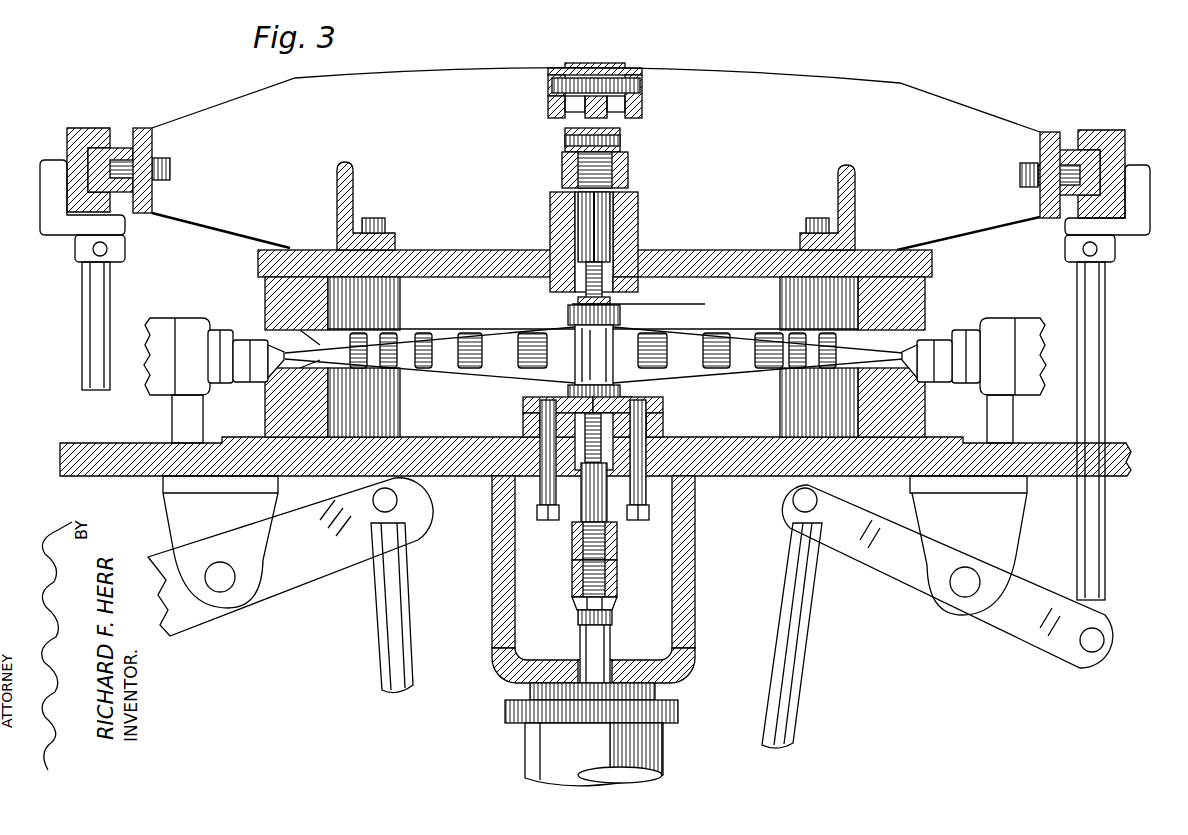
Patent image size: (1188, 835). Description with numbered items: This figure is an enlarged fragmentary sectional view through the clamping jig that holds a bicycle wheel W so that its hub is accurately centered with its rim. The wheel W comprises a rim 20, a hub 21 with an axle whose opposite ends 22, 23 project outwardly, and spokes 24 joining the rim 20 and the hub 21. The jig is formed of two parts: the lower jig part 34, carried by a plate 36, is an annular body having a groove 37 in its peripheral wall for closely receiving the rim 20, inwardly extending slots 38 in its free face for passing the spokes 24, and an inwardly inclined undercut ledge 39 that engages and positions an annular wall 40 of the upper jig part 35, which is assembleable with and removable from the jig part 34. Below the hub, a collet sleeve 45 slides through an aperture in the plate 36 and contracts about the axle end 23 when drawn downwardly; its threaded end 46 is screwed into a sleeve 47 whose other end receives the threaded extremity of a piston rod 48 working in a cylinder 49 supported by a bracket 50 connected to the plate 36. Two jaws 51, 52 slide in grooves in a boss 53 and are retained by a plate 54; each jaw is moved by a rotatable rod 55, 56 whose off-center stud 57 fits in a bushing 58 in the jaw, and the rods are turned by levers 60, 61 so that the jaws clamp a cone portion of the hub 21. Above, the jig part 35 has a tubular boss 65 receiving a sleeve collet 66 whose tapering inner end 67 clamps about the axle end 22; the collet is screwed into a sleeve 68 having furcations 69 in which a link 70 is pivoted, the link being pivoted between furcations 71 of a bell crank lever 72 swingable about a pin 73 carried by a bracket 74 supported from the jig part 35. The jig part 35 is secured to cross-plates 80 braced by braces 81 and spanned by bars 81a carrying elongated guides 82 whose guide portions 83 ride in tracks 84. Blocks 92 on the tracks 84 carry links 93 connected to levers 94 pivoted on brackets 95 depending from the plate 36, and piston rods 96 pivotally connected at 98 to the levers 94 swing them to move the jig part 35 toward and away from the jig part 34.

The rim 20 is at (912, 378).
The hub 21 is at (590, 355).
The axle end 22 is at (580, 300).
The axle end 23 is at (578, 436).
The spokes 24 is at (458, 369).
The jig part 34 is at (268, 420).
The jig part 35 is at (408, 250).
The plate 36 is at (742, 452).
The groove 37 is at (272, 395).
The slots 38 is at (398, 312).
The undercut ledge 39 is at (298, 338).
The annular wall 40 is at (312, 308).
The collet sleeve 45 is at (590, 508).
The end 46 is at (618, 540).
The sleeve 47 is at (618, 575).
The piston rod 48 is at (605, 645).
The cylinder 49 is at (645, 758).
The bracket 50 is at (697, 656).
The jaw 51 is at (525, 406).
The jaw 52 is at (664, 406).
The boss 53 is at (663, 427).
The plate 54 is at (536, 397).
The rotatable rod 55 is at (548, 460).
The rotatable rod 56 is at (668, 470).
The off-center stud 57 is at (637, 400).
The bushing 58 is at (642, 398).
The lever 60 is at (548, 500).
The lever 61 is at (642, 500).
The tubular boss 65 is at (640, 212).
The sleeve collet 66 is at (585, 215).
The tapering inner end 67 is at (616, 290).
The sleeve 68 is at (630, 170).
The furcations 69 is at (567, 128).
The link 70 is at (642, 110).
The furcations 71 is at (583, 67).
The bell crank lever 72 is at (612, 64).
The pin 73 is at (550, 88).
The bracket 74 is at (556, 110).
The cross-plates 80 is at (410, 88).
The braces 81 is at (352, 193).
The bar 81a is at (152, 140).
The elongated guide 82 is at (128, 140).
The guide portion 83 is at (103, 150).
The track 84 is at (70, 130).
The block 92 is at (55, 178).
The link 93 is at (90, 322).
The lever 94 is at (270, 575).
The bracket 95 is at (245, 523).
The piston rod 96 is at (390, 648).
The pivotal connection 98 is at (396, 507).
The bicycle wheel W is at (620, 320).